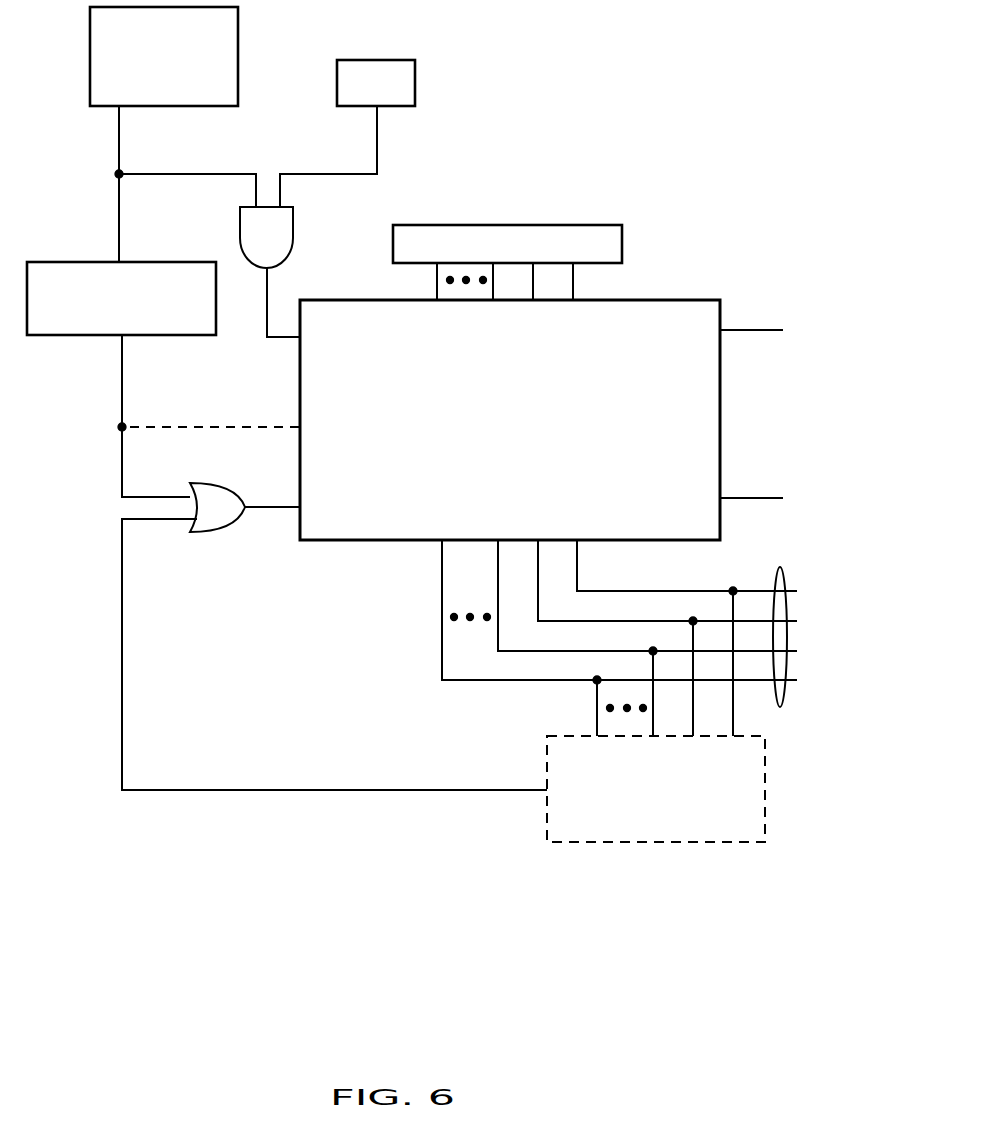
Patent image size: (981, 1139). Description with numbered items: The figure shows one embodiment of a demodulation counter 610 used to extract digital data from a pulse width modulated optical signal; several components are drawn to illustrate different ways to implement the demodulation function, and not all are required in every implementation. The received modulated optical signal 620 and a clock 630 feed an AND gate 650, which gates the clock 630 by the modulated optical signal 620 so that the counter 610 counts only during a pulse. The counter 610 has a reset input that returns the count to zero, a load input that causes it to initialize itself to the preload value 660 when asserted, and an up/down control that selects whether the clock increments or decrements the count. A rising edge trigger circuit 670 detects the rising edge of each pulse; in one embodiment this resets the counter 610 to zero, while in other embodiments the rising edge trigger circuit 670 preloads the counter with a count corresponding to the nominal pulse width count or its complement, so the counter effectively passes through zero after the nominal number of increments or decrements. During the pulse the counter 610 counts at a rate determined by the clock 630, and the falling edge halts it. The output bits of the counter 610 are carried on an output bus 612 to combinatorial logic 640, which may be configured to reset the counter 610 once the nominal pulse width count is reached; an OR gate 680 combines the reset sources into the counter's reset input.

The demodulation counter 610 is at (720, 413).
The counter output bus 612 is at (780, 567).
The modulated optical signal 620 is at (238, 13).
The clock 630 is at (377, 60).
The combinatorial logic 640 is at (765, 785).
The AND gate 650 is at (293, 228).
The preload value 660 is at (622, 237).
The rising edge trigger circuit 670 is at (96, 262).
The OR gate 680 is at (213, 532).